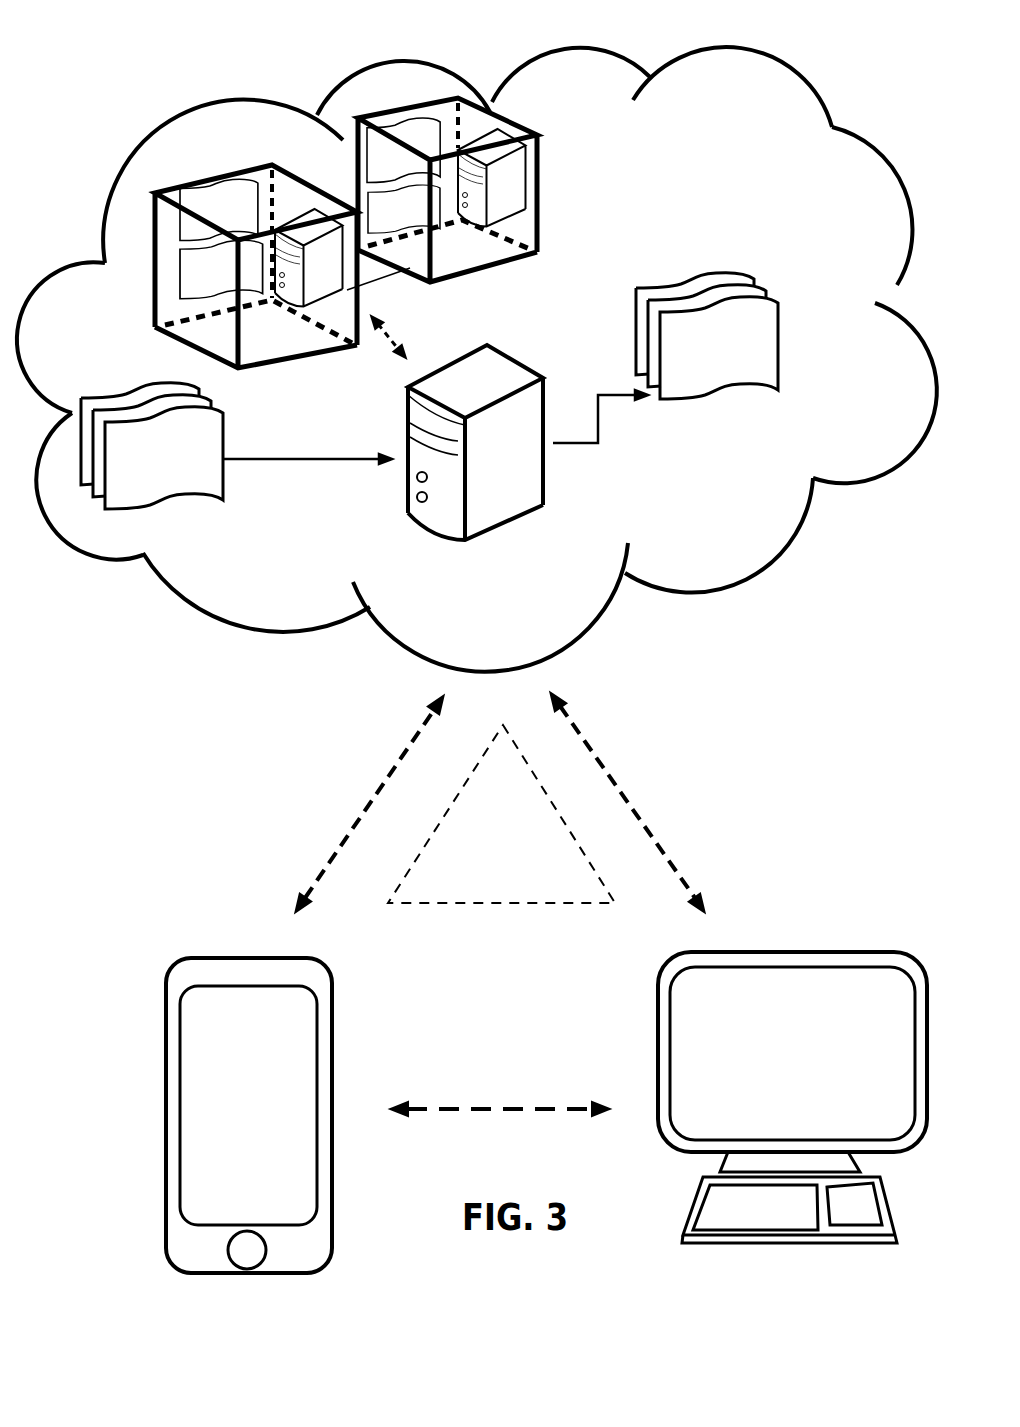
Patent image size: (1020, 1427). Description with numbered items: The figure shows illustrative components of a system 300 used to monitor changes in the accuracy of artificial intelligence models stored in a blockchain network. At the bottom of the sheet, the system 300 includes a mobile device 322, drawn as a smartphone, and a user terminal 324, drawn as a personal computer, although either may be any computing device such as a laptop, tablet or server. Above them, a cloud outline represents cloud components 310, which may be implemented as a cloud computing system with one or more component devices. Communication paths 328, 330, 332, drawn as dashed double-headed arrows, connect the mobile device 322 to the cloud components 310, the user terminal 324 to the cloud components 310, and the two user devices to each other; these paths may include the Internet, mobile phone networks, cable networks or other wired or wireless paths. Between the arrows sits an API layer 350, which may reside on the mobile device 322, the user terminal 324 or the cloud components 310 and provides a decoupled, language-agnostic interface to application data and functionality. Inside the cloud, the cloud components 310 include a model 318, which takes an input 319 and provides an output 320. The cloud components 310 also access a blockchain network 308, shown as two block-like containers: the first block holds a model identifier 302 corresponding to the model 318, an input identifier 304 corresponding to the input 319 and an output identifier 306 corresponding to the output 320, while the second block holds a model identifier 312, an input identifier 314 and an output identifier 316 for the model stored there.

The system 300 is at (473, 57).
The model identifier 302 is at (309, 258).
The input identifier 304 is at (219, 209).
The output identifier 306 is at (221, 269).
The blockchain network 308 is at (578, 197).
The cloud components 310 is at (240, 592).
The model identifier 312 is at (492, 178).
The input identifier 314 is at (403, 150).
The output identifier 316 is at (404, 209).
The model 318 is at (508, 543).
The input 319 is at (150, 380).
The output 320 is at (742, 372).
The mobile device 322 is at (236, 928).
The user terminal 324 is at (789, 933).
The communication path 328 is at (320, 785).
The communication path 330 is at (708, 750).
The communication path 332 is at (496, 1072).
The API layer 350 is at (486, 840).